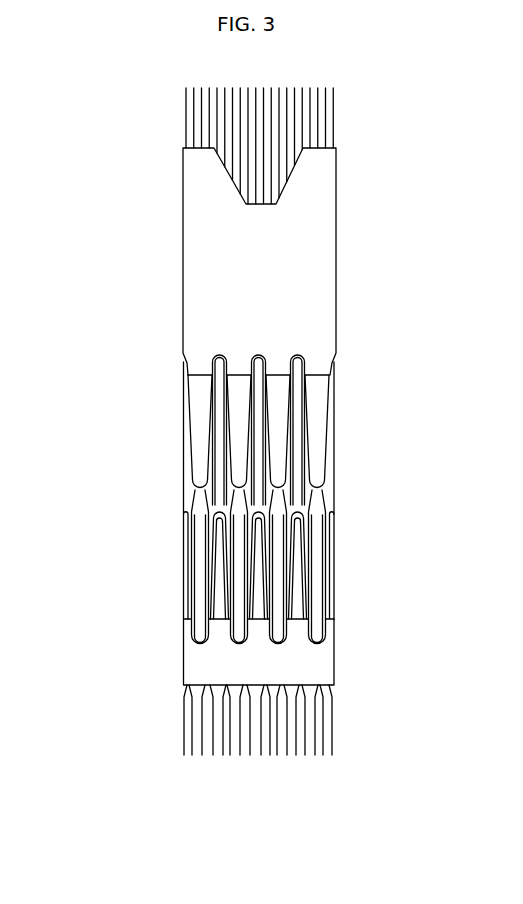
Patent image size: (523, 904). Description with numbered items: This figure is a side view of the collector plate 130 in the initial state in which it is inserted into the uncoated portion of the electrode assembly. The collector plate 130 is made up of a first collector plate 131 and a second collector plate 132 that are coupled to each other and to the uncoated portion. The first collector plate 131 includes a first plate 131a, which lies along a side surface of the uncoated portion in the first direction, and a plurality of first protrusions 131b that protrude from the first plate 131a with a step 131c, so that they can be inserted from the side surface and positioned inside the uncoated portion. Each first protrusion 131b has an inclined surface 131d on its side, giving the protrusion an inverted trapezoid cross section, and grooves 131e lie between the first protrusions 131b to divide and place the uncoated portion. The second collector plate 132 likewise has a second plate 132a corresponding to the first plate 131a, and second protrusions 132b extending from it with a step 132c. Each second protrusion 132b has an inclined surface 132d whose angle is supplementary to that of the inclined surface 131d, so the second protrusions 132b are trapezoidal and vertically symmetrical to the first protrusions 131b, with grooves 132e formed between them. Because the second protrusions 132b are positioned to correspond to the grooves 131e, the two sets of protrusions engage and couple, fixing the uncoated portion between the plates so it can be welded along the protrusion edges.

The collector plate 130 is at (103, 165).
The first collector plate 131 is at (362, 170).
The first plate 131a is at (328, 237).
The first protrusions 131b is at (317, 463).
The step 131c is at (318, 376).
The inclined surface 131d is at (278, 447).
The grooves 131e is at (305, 356).
The second collector plate 132 is at (358, 708).
The second plate 132a is at (332, 672).
The second protrusions 132b is at (332, 550).
The step 132c is at (333, 620).
The inclined surface 132d is at (285, 590).
The grooves 132e is at (328, 644).